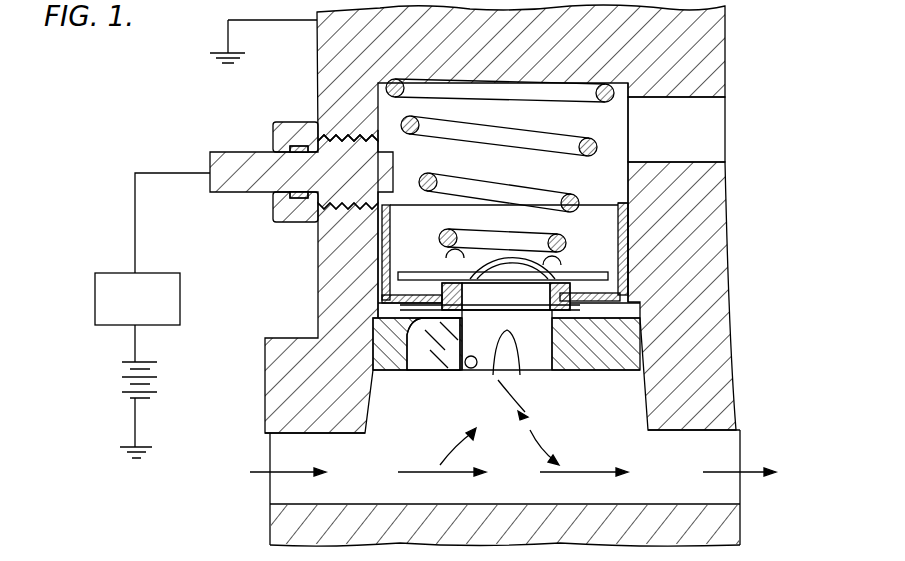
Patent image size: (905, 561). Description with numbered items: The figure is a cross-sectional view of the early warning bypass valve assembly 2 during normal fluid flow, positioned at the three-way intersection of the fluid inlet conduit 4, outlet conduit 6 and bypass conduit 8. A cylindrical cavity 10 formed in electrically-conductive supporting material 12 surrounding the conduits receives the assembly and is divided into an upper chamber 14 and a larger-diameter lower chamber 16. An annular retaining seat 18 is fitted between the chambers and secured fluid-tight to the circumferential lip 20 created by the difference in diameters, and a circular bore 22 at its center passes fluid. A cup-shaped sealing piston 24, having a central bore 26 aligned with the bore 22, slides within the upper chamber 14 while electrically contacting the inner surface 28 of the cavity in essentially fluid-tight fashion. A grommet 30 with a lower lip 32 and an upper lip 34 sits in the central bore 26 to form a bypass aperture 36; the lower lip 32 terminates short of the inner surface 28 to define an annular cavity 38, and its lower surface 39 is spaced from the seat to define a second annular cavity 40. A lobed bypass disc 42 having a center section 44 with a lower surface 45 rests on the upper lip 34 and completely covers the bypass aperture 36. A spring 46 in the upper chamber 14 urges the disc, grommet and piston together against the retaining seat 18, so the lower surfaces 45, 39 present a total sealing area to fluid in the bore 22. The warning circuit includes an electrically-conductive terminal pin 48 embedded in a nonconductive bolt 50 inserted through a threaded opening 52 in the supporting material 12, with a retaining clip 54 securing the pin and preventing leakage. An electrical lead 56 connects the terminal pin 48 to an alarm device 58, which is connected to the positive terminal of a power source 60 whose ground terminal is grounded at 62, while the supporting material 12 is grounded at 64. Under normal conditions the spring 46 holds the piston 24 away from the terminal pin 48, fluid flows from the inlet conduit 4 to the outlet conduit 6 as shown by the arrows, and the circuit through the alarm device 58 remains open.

The early warning bypass valve assembly 2 is at (276, 263).
The fluid inlet conduit 4 is at (272, 445).
The fluid outlet conduit 6 is at (740, 445).
The bypass conduit 8 is at (718, 126).
The cylindrical cavity 10 is at (650, 395).
The supporting material 12 is at (683, 47).
The upper chamber 14 is at (607, 173).
The lower chamber 16 is at (370, 418).
The annular retaining seat 18 is at (560, 375).
The circumferential lip 20 is at (320, 318).
The circular bore 22 is at (465, 370).
The cup-shaped sealing piston 24 is at (617, 211).
The circular central bore 26 is at (600, 320).
The inner surface 28 is at (382, 118).
The grommet 30 is at (438, 275).
The lower lip 32 is at (415, 370).
The upper lip 34 is at (575, 270).
The bypass aperture 36 is at (546, 298).
The annular cavity 38 is at (620, 308).
The lower surface 39 is at (433, 344).
The second annular cavity 40 is at (506, 296).
The lobed bypass disc 42 is at (620, 263).
The center section 44 is at (520, 234).
The lower surface 45 is at (497, 355).
The spring 46 is at (545, 135).
The terminal pin 48 is at (232, 152).
The bolt 50 is at (283, 122).
The threaded opening 52 is at (338, 128).
The retaining clip 54 is at (270, 210).
The electrical lead 56 is at (135, 233).
The alarm device 58 is at (95, 297).
The power source 60 is at (120, 382).
The ground 62 is at (115, 453).
The ground 64 is at (200, 59).